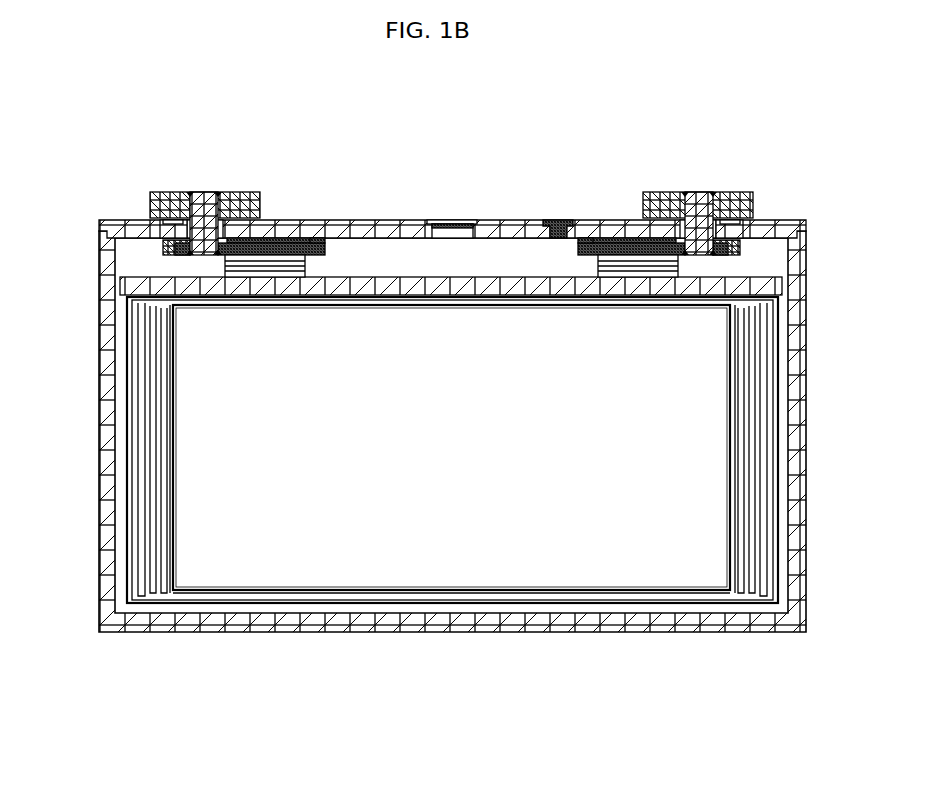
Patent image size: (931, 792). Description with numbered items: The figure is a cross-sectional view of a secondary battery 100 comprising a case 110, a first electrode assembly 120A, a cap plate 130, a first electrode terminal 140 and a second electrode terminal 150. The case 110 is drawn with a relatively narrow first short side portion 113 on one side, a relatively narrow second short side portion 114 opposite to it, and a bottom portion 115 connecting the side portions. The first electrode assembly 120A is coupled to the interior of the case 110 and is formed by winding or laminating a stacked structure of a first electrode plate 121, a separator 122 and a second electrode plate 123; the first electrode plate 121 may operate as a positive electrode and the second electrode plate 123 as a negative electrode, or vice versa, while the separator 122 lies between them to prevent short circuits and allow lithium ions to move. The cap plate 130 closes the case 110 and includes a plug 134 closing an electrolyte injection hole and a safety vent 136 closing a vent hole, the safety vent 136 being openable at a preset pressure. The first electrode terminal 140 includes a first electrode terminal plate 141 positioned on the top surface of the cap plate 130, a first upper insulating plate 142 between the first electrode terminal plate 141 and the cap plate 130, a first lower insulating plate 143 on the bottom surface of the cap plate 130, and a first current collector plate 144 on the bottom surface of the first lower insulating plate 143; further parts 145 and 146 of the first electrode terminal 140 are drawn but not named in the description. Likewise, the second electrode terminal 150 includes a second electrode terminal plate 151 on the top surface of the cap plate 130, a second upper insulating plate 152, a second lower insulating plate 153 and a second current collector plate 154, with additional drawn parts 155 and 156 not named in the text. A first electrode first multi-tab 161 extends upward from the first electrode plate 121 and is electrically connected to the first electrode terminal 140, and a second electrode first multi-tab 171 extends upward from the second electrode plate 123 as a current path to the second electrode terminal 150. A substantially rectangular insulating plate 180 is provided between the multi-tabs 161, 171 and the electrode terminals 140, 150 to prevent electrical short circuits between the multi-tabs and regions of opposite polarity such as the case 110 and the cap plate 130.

The secondary battery 100 is at (50, 89).
The case 110 is at (454, 462).
The first short side portion 113 is at (99, 428).
The second short side portion 114 is at (807, 428).
The bottom portion 115 is at (553, 633).
The first electrode assembly 120A is at (434, 495).
The first electrode plate 121 is at (298, 590).
The separator 122 is at (430, 600).
The second electrode plate 123 is at (163, 596).
The cap plate 130 is at (383, 224).
The plug 134 is at (557, 220).
The safety vent 136 is at (452, 224).
The first electrode terminal 140 is at (191, 176).
The first electrode terminal plate 141 is at (233, 192).
The first upper insulating plate 142 is at (157, 217).
The first lower insulating plate 143 is at (312, 244).
The first current collector plate 144 is at (271, 240).
The first terminal pillar 145 is at (201, 192).
The first lower gasket 146 is at (168, 244).
The second electrode terminal 150 is at (714, 176).
The second electrode terminal plate 151 is at (663, 192).
The second upper insulating plate 152 is at (765, 224).
The second lower insulating plate 153 is at (585, 244).
The second current collector plate 154 is at (627, 240).
The second terminal pillar 155 is at (702, 192).
The second lower gasket 156 is at (740, 242).
The first electrode first multi-tab 161 is at (306, 265).
The second electrode first multi-tab 171 is at (598, 265).
The insulating plate 180 is at (785, 284).